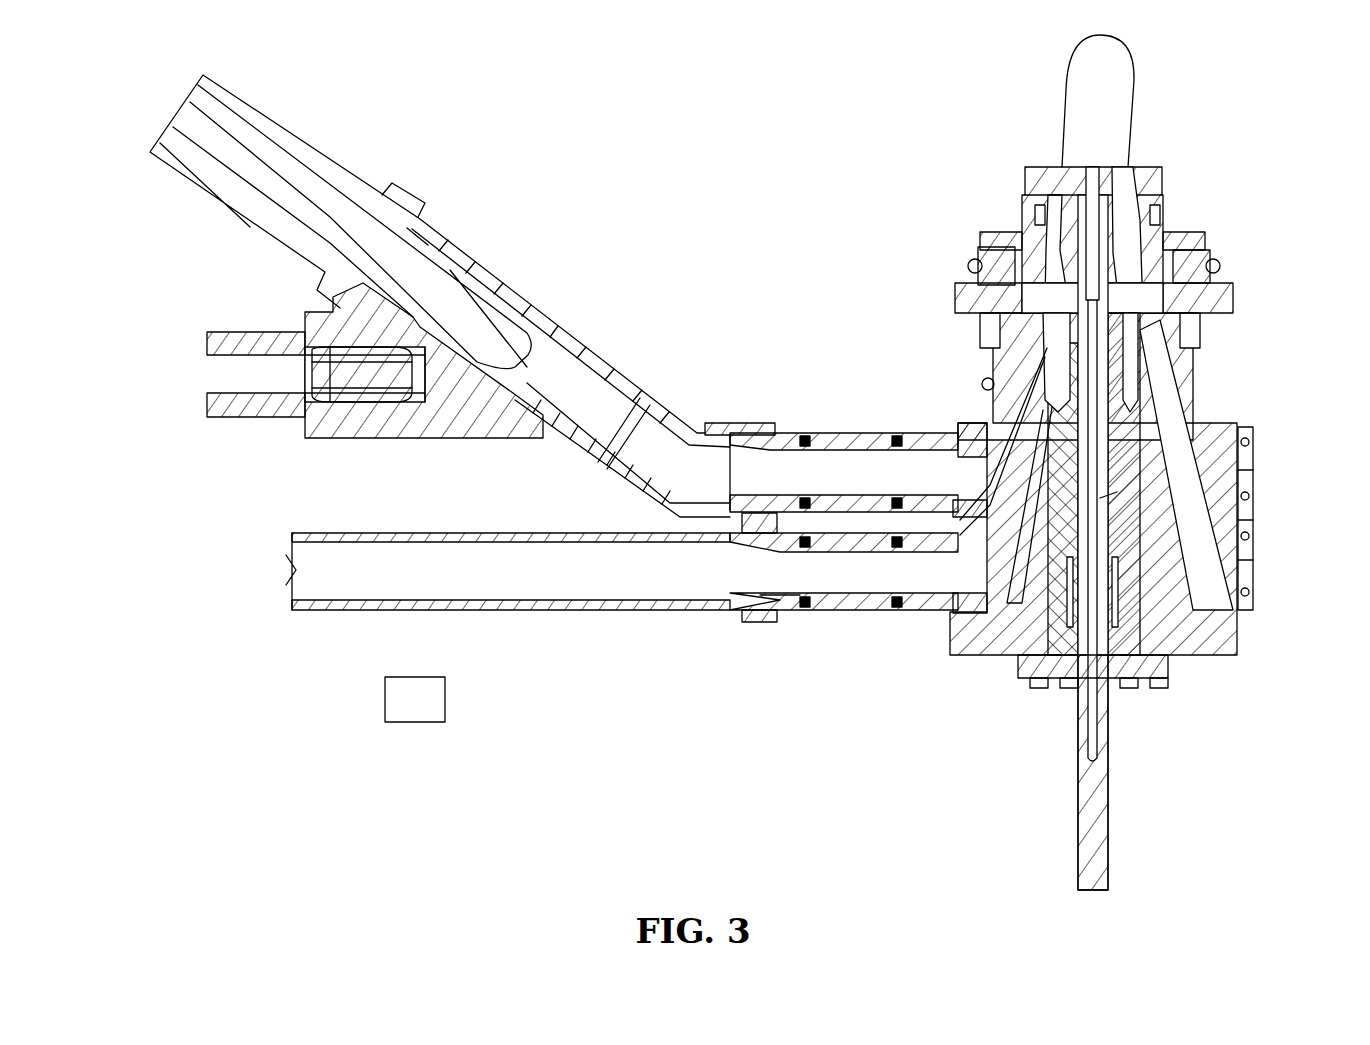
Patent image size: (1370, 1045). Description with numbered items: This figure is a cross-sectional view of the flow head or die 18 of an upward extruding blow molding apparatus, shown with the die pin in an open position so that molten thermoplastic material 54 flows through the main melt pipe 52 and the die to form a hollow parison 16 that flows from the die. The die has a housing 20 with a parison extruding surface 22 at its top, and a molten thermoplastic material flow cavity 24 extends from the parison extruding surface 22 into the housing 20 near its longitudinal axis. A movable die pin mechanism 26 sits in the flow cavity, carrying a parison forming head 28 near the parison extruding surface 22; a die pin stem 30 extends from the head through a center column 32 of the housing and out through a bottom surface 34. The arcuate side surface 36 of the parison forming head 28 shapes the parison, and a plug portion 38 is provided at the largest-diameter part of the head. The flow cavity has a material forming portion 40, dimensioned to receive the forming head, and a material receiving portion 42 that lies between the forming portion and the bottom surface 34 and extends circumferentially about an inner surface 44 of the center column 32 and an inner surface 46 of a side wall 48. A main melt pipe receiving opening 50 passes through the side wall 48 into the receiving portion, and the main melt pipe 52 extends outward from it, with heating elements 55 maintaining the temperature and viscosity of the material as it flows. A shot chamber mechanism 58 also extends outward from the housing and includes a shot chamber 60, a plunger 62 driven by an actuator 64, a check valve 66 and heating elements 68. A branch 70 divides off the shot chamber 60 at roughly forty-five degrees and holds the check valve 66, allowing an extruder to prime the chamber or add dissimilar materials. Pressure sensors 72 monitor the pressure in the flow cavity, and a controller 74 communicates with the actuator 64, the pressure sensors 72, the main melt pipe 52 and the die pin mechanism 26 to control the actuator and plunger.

The parison 16 is at (1120, 60).
The flow head or die 18 is at (1265, 326).
The housing 20 is at (1180, 387).
The parison extruding surface 22 is at (1030, 170).
The molten thermoplastic material flow cavity 24 is at (1135, 265).
The movable die pin mechanism 26 is at (1100, 498).
The parison forming head 28 is at (1115, 190).
The die pin stem 30 is at (1088, 768).
The center column 32 is at (1050, 590).
The bottom surface 34 is at (1200, 657).
The side surface 36 is at (975, 268).
The plug portion 38 is at (1030, 185).
The material forming portion 40 is at (955, 300).
The material receiving portion 42 is at (1040, 385).
The inner surface 44 is at (945, 550).
The inner surface 46 is at (1005, 585).
The side wall 48 is at (1220, 430).
The main melt pipe receiving opening 50 is at (948, 458).
The main melt pipe 52 is at (765, 612).
The molten thermoplastic material 54 is at (575, 580).
The heating elements 55 is at (790, 585).
The shot chamber mechanism 58 is at (689, 378).
The shot chamber 60 is at (748, 468).
The plunger 62 is at (440, 285).
The actuator 64 is at (290, 157).
The check valve 66 is at (350, 390).
The heating elements 68 is at (805, 433).
The branch 70 is at (485, 380).
The pressure sensors 72 is at (980, 240).
The controller 74 is at (405, 712).